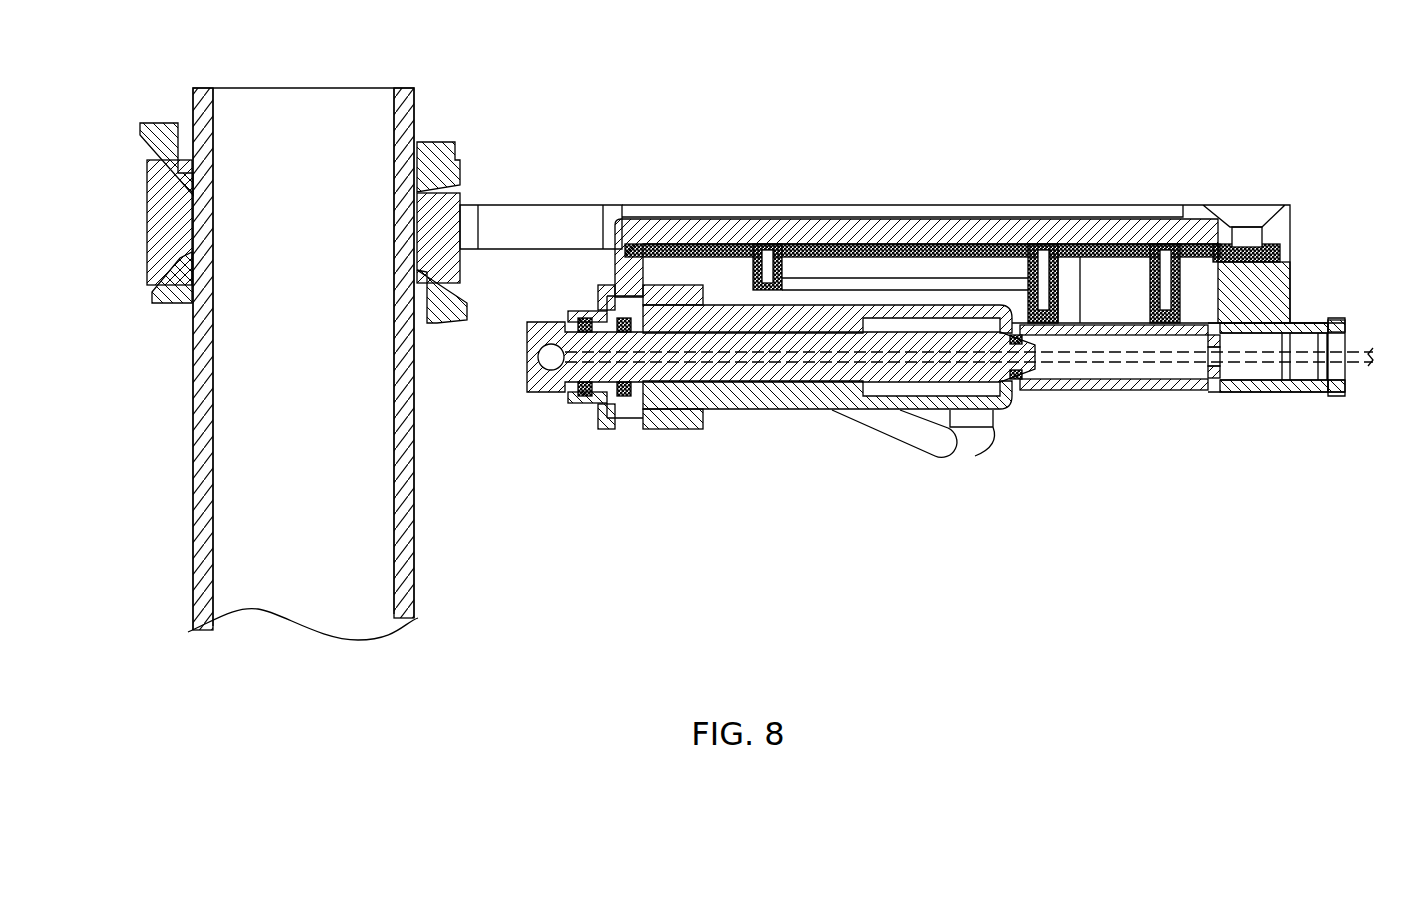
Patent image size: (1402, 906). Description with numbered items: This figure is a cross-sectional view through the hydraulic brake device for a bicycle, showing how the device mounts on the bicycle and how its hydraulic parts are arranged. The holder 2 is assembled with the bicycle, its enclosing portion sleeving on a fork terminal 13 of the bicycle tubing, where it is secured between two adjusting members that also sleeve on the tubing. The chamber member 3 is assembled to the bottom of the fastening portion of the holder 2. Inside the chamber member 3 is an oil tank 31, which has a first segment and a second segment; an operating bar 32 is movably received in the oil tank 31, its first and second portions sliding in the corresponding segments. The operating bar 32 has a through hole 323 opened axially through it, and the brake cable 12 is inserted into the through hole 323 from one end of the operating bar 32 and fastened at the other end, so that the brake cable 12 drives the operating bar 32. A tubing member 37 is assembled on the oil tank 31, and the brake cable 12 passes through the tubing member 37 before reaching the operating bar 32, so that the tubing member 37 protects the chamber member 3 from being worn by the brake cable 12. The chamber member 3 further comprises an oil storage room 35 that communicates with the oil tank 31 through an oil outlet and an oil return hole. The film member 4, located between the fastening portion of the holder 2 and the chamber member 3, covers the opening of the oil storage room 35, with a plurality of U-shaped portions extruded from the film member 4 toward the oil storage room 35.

The fork terminal 13 is at (203, 440).
The oil storage room 35 is at (832, 267).
The oil tank 31 is at (892, 325).
The holder 2 is at (1047, 232).
The film member 4 is at (1112, 245).
The chamber member 3 is at (1280, 287).
The operating bar 32 is at (733, 395).
The through hole 323 is at (887, 365).
The brake cable 12 is at (1082, 362).
The tubing member 37 is at (1298, 382).